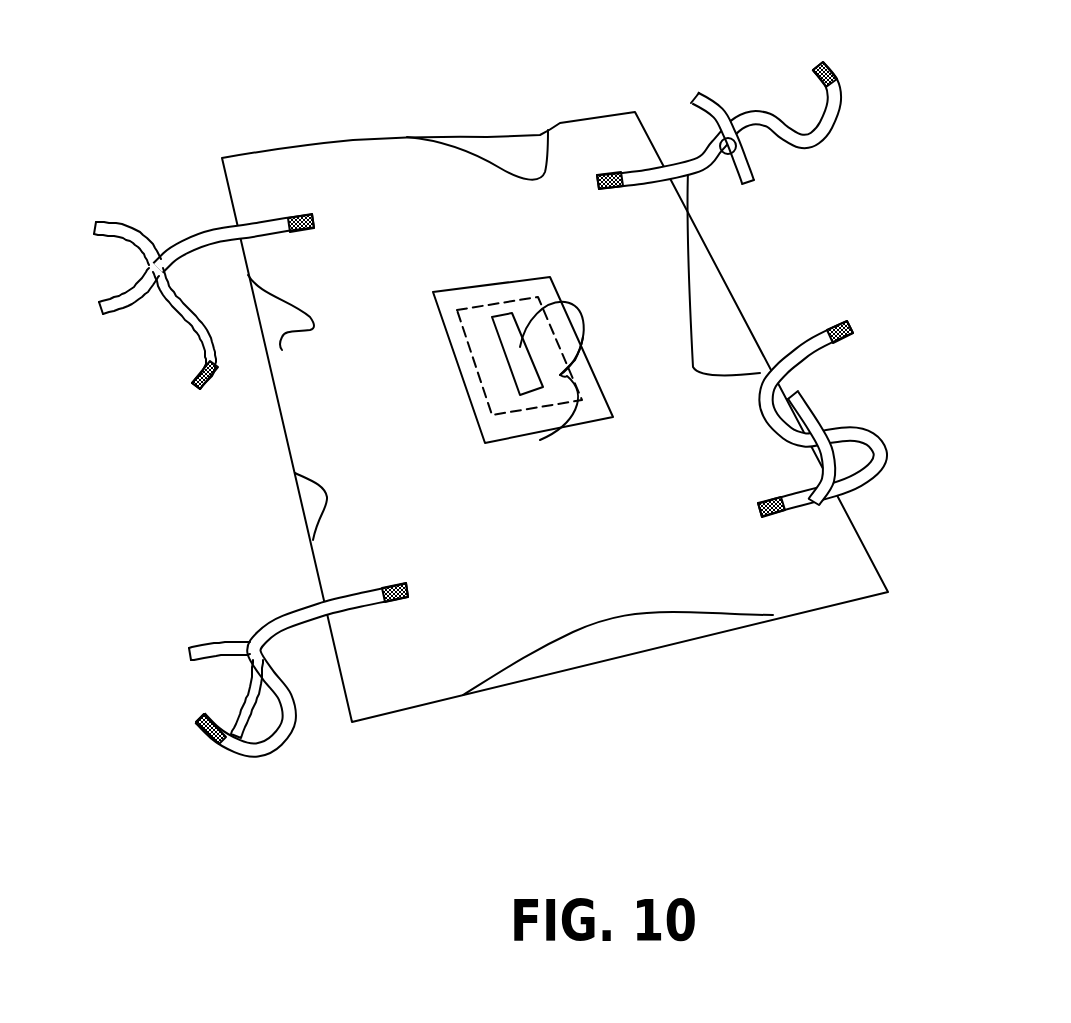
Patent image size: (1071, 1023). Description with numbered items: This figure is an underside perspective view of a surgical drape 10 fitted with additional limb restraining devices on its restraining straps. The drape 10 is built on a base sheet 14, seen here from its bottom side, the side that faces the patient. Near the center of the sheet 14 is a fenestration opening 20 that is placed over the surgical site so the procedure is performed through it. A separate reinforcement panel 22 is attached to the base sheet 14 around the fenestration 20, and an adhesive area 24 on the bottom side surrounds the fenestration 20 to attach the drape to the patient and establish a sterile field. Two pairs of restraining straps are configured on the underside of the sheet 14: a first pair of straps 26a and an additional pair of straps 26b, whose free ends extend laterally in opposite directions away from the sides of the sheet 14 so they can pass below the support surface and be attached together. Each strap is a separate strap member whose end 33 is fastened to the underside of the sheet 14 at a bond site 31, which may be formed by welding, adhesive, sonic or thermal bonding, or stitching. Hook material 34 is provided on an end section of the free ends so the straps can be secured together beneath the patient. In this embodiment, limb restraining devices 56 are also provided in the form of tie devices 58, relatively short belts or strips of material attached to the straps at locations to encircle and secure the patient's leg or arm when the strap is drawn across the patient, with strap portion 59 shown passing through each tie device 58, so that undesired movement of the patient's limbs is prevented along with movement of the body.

The surgical drape 10 is at (491, 390).
The base sheet 14 is at (490, 136).
The fenestration opening 20 is at (520, 347).
The reinforcement panel 22 is at (593, 407).
The adhesive area 24 is at (583, 337).
The straps 26a is at (713, 170).
The additional pair of straps 26b is at (803, 350).
The bond sites 31 is at (627, 189).
The end 33 is at (598, 183).
The hook material 34 is at (824, 68).
The limb restraining devices 56 is at (470, 384).
The tie devices 58 is at (708, 100).
The strap portion 59 is at (737, 147).